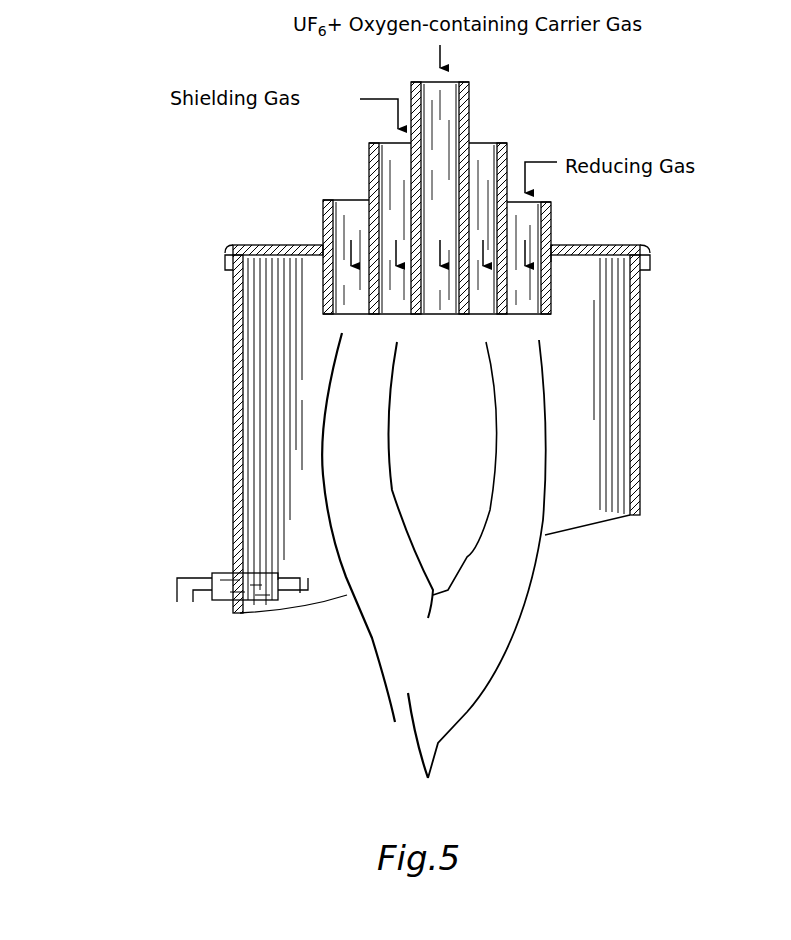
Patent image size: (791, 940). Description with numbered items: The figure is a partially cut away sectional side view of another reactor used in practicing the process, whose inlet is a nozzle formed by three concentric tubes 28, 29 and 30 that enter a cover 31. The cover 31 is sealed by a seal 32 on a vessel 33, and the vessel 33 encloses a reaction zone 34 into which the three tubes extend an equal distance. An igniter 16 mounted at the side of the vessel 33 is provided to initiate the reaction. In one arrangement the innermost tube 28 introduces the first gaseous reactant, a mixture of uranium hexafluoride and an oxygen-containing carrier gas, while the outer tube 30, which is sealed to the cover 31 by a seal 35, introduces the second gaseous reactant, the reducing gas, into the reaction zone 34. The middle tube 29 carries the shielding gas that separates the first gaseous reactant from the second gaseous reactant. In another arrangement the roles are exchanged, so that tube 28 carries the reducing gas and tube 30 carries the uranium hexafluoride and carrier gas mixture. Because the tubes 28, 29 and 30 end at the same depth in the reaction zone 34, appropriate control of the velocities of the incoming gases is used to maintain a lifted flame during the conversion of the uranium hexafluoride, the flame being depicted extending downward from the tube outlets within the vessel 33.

The igniter 16 is at (232, 574).
The tube 28 is at (468, 110).
The tube 29 is at (505, 150).
The tube 30 is at (552, 226).
The cover 31 is at (628, 248).
The seal 32 is at (655, 265).
The vessel 33 is at (643, 343).
The reaction zone 34 is at (578, 360).
The seal 35 is at (552, 262).